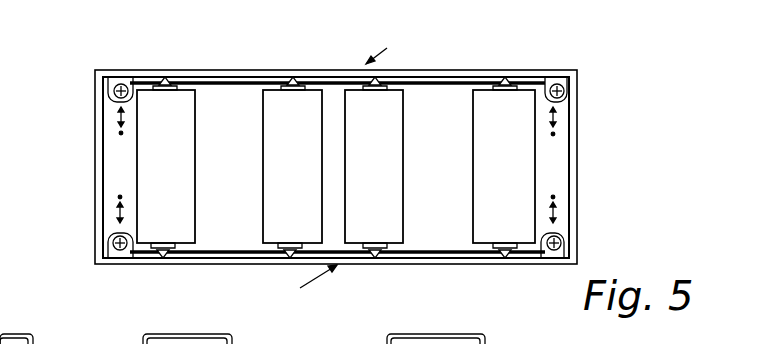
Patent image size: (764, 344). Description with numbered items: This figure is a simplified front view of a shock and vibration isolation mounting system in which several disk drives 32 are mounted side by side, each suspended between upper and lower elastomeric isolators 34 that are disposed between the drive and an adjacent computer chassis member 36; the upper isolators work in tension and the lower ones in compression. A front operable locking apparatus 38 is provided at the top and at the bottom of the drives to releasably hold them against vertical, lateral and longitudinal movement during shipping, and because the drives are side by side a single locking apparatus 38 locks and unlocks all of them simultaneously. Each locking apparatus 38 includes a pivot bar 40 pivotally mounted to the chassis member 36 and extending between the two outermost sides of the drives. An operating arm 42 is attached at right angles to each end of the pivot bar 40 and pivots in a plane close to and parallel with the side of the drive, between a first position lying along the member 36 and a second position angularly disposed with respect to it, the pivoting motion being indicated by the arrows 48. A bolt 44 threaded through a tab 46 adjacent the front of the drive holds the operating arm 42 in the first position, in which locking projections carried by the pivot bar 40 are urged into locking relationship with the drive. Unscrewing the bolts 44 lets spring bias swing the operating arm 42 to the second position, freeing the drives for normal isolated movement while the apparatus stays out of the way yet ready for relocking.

The disk drive 32 is at (180, 168).
The elastomeric isolator 34 is at (176, 79).
The computer chassis member 36 is at (308, 72).
The front operable locking apparatus 38 is at (341, 168).
The pivot bar 40 is at (158, 80).
The operating arm 42 is at (121, 133).
The bolt 44 is at (116, 77).
The tab 46 is at (558, 70).
The arrows 48 is at (119, 119).